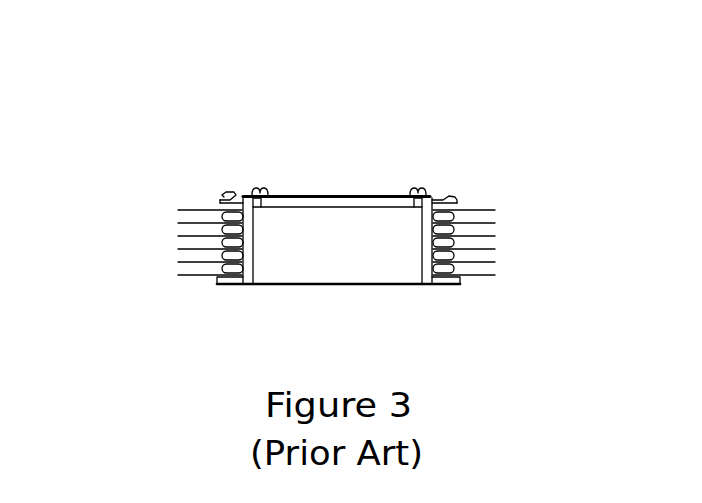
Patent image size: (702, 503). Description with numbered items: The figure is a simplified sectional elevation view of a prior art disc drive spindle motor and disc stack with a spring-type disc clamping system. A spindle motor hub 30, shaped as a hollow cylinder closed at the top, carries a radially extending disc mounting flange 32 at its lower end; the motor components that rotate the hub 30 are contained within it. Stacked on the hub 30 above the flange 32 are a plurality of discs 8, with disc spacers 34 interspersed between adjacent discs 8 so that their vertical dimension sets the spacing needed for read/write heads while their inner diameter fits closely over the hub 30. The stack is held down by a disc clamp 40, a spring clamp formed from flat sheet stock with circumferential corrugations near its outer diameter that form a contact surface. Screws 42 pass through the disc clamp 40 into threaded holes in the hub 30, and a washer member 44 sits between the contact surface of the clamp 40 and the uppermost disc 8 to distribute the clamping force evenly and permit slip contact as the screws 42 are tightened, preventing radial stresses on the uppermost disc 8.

The disc 8 is at (485, 213).
The spindle motor hub 30 is at (332, 205).
The disc mounting flange 32 is at (443, 280).
The disc spacer 34 is at (228, 239).
The disc clamp 40 is at (240, 193).
The screw 42 is at (422, 188).
The washer member 44 is at (457, 198).